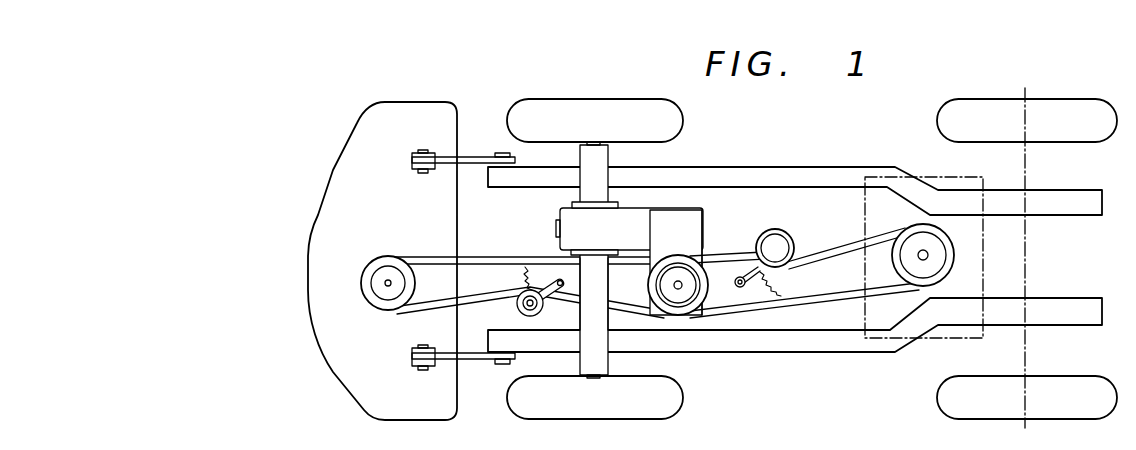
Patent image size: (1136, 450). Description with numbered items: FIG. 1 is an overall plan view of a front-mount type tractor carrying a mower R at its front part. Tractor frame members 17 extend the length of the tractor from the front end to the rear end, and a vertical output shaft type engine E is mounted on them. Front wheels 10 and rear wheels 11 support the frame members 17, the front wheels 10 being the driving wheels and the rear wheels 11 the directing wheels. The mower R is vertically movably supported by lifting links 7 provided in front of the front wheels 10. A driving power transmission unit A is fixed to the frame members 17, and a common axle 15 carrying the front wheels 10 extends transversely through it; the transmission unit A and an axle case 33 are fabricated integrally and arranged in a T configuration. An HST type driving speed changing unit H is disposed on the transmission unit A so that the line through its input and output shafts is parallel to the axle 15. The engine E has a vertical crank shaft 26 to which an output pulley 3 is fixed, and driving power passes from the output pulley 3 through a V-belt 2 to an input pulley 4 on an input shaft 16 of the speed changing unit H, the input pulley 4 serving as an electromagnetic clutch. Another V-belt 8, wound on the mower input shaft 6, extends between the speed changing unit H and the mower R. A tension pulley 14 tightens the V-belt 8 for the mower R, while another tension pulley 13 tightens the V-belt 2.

The mower R is at (325, 356).
The V-belt 2 is at (829, 297).
The output pulley 3 is at (955, 243).
The input pulley 4 is at (694, 287).
The input shaft for the mower 6 is at (390, 310).
The lifting links 7 is at (473, 157).
The V-belt 8 is at (473, 257).
The front wheels 10 is at (607, 100).
The rear wheels 11 is at (984, 100).
The tension pulley 13 is at (777, 229).
The tension pulley 14 is at (517, 305).
The axle 15 is at (596, 378).
The input shaft 16 is at (678, 282).
The tractor frame members 17 is at (775, 165).
The vertical crank shaft 26 is at (928, 257).
The axle case 33 is at (589, 312).
The driving power transmission unit A is at (558, 229).
The engine E is at (865, 223).
The driving speed changing unit H is at (697, 245).